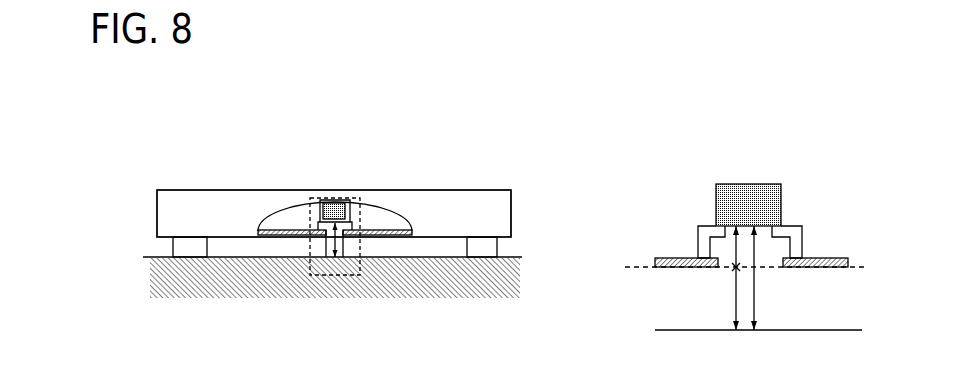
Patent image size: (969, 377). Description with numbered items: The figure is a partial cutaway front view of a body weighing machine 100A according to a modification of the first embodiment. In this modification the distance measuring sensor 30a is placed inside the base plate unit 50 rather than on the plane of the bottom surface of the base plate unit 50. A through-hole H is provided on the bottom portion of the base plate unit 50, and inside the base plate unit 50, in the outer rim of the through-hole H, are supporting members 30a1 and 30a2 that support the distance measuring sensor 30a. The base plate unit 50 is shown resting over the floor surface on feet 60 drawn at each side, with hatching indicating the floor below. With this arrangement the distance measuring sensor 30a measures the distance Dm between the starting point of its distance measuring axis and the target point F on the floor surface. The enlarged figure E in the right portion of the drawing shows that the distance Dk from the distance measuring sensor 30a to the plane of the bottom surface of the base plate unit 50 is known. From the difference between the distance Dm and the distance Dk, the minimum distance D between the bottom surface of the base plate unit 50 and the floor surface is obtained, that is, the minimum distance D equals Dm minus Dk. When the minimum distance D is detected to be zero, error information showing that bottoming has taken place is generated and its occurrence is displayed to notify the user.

The body weighing machine 100A is at (228, 140).
The base plate unit 50 is at (447, 190).
The spacer 60 is at (173, 254).
The distance measuring sensor 30a is at (338, 200).
The supporting member 30a1 is at (310, 200).
The supporting member 30a2 is at (360, 196).
The figure E is at (318, 275).
The distance Dm is at (338, 255).
The minimum distance D is at (735, 303).
The distance Dk is at (738, 240).
The through-hole H is at (318, 250).
The target point F is at (335, 264).